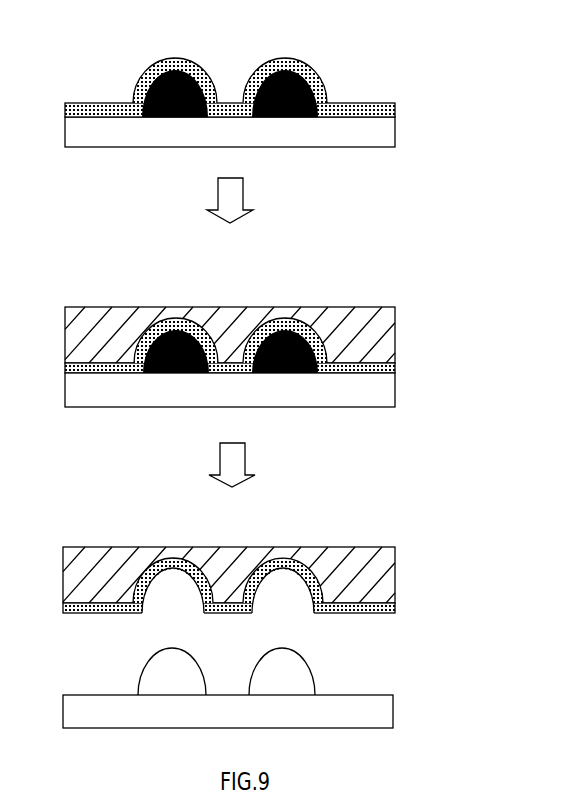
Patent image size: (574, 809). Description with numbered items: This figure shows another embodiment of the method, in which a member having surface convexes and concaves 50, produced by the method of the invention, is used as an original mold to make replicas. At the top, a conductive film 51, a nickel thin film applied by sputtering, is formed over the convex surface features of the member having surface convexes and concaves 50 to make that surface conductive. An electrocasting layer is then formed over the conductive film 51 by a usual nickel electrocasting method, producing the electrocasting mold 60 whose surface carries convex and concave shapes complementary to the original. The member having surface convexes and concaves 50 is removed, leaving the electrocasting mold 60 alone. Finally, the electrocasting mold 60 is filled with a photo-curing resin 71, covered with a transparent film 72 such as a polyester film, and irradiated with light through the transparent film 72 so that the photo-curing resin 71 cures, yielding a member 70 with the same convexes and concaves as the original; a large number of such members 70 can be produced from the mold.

The member having surface convexes and concaves 50 is at (335, 132).
The conductive film 51 is at (173, 57).
The electrocasting mold 60 is at (135, 312).
The member 70 is at (278, 681).
The photo-curing resin 71 is at (315, 675).
The transparent film 72 is at (393, 710).